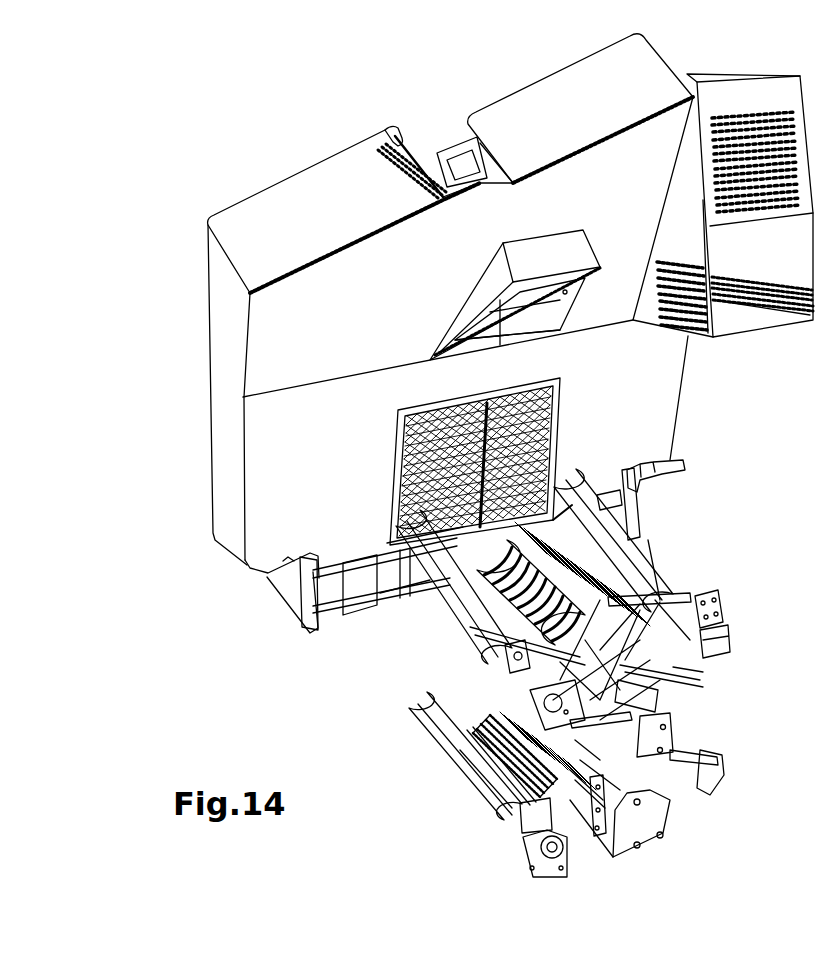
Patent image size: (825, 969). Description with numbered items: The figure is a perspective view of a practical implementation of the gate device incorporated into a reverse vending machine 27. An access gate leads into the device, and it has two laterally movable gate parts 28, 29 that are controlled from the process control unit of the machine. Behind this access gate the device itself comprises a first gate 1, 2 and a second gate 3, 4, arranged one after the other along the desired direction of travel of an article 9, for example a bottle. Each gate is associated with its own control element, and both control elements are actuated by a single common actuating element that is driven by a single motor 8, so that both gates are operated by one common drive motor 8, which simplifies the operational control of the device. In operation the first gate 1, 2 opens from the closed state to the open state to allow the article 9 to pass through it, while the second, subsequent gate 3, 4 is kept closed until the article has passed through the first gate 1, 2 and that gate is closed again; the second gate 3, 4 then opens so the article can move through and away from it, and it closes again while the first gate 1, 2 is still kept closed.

The reverse vending machine 27 is at (257, 428).
The laterally movable gate part 28 is at (437, 466).
The laterally movable gate part 29 is at (540, 437).
The first gate 1 is at (480, 597).
The first gate 2 is at (627, 568).
The article 9 is at (578, 551).
The second gate 3 is at (447, 727).
The second gate 4 is at (513, 723).
The motor 8 is at (595, 836).